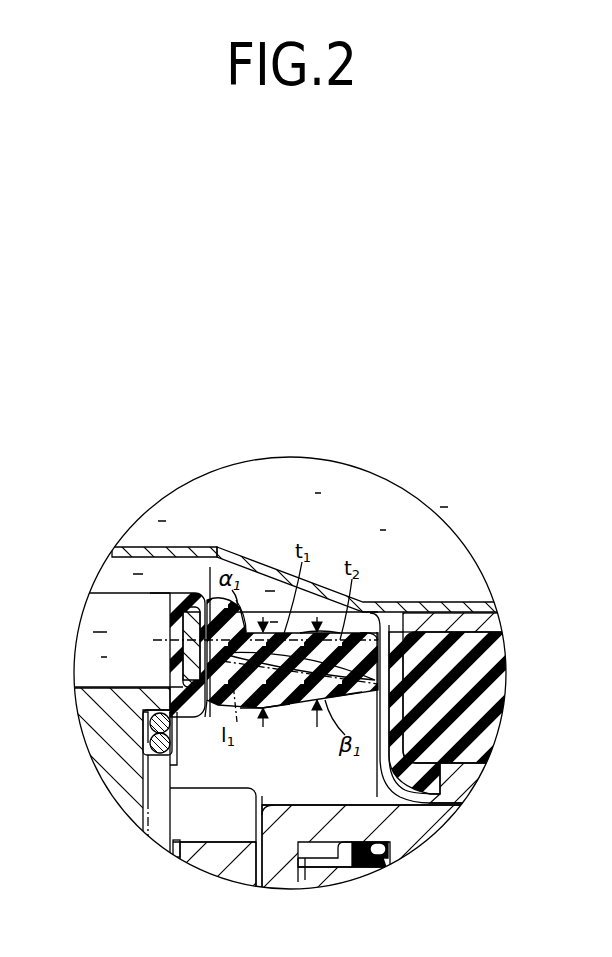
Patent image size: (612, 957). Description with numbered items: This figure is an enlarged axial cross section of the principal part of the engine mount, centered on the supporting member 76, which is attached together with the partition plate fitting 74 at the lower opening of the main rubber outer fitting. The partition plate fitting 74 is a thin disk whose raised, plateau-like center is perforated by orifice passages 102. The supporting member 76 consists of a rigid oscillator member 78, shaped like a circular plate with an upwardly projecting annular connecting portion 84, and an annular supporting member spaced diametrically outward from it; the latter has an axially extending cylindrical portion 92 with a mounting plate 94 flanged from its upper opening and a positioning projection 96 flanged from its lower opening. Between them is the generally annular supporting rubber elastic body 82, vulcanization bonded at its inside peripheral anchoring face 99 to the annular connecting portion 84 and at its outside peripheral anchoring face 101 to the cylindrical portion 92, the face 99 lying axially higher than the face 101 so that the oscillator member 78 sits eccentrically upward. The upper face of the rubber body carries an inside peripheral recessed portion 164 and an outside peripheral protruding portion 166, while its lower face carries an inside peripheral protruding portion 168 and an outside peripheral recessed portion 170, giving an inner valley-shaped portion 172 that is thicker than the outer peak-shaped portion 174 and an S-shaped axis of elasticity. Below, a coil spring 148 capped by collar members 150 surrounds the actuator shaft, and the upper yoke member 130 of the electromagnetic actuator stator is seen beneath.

The partition plate fitting 74 is at (273, 557).
The supporting member 76 is at (194, 579).
The oscillator member 78 is at (167, 698).
The supporting rubber elastic body 82 is at (303, 703).
The annular connecting portion 84 is at (193, 632).
The cylindrical portion 92 is at (397, 715).
The mounting plate 94 is at (457, 620).
The positioning projection 96 is at (463, 777).
The inside peripheral anchoring face 99 is at (203, 708).
The outside peripheral anchoring face 101 is at (392, 646).
The orifice passages 102 is at (147, 547).
The yoke member 130 is at (275, 864).
The coil spring 148 is at (160, 748).
The collar member 150 is at (143, 722).
The inside peripheral recessed portion 164 is at (255, 628).
The outside peripheral protruding portion 166 is at (327, 640).
The inside peripheral protruding portion 168 is at (256, 708).
The outside peripheral recessed portion 170 is at (360, 697).
The valley-shaped portion 172 is at (271, 692).
The peak-shaped portion 174 is at (358, 640).